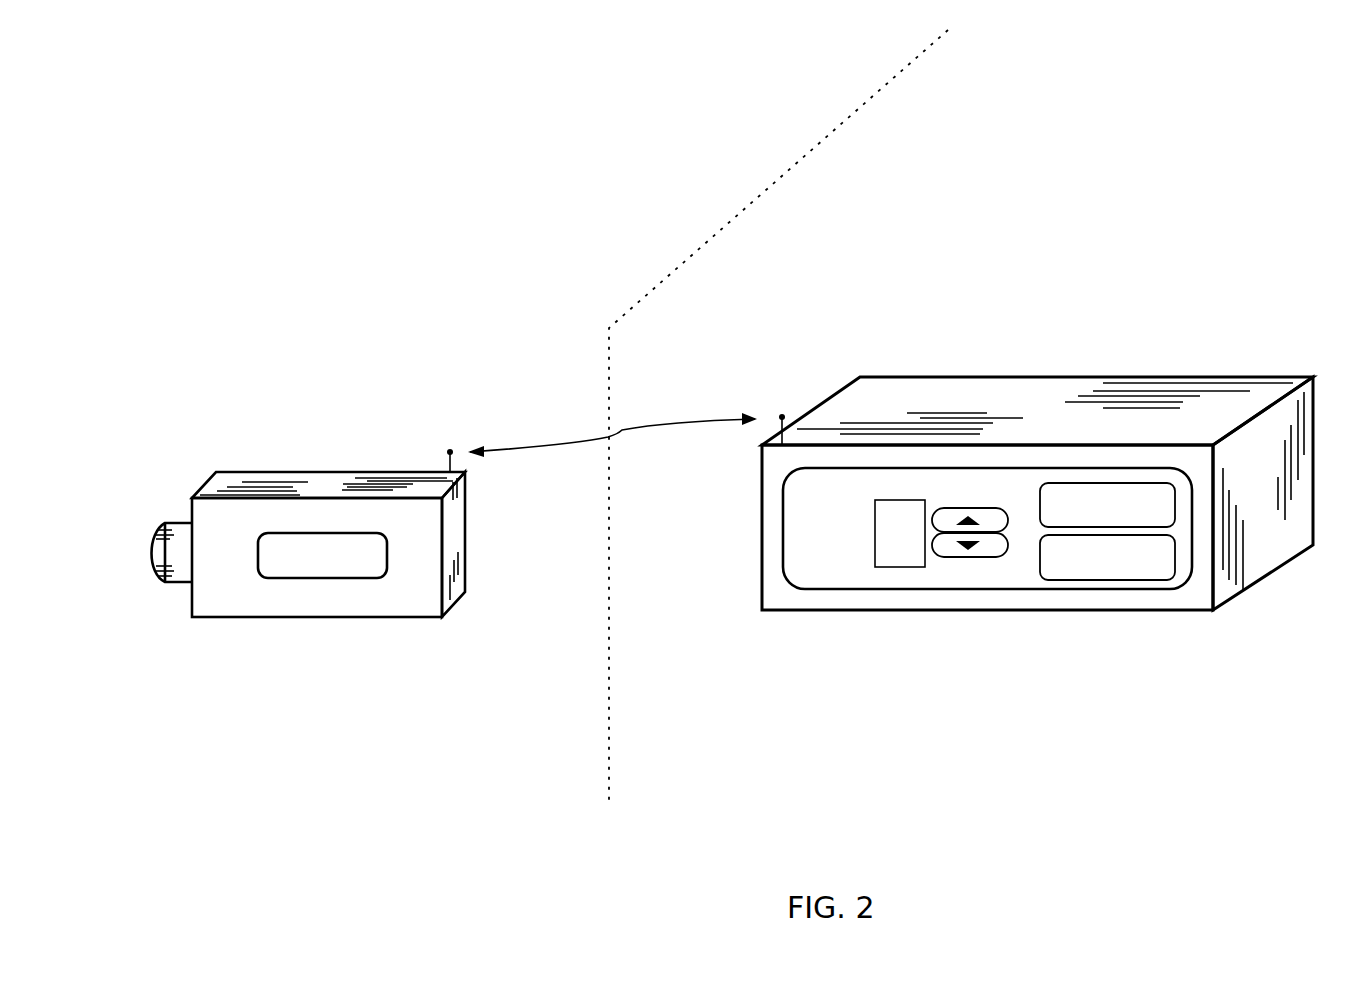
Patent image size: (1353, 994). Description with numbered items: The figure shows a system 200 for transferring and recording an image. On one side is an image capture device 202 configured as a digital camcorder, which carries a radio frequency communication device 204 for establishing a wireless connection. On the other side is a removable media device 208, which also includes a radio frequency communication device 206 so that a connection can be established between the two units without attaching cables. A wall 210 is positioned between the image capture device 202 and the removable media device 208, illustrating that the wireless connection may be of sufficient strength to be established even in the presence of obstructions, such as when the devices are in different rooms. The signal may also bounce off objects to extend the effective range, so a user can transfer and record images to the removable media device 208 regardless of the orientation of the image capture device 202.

The system 200 is at (331, 212).
The image capture device 202 is at (325, 472).
The radio frequency communication device 204 is at (461, 420).
The recording device 206 is at (970, 611).
The removable media device 208 is at (776, 407).
The wall 210 is at (662, 275).